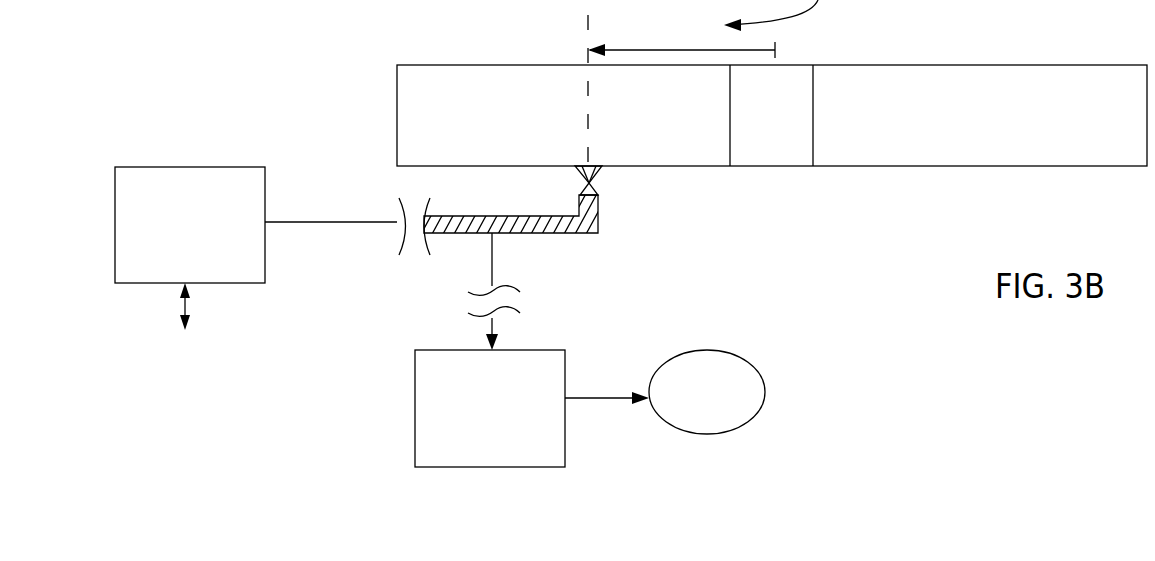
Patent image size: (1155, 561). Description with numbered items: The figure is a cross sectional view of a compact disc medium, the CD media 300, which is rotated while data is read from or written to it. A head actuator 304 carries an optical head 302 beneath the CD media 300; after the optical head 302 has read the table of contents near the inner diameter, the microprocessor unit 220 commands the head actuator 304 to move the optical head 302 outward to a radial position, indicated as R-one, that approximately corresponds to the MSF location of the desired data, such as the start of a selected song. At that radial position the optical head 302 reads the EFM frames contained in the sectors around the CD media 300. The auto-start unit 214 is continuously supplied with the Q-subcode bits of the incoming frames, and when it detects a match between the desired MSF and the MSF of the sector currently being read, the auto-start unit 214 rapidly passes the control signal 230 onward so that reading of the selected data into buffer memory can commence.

The CD media 300 is at (1043, 64).
The optical head 302 is at (598, 208).
The head actuator 304 is at (182, 167).
The microprocessor unit 220 is at (186, 320).
The auto-start unit 214 is at (430, 350).
The control signal 230 is at (598, 401).